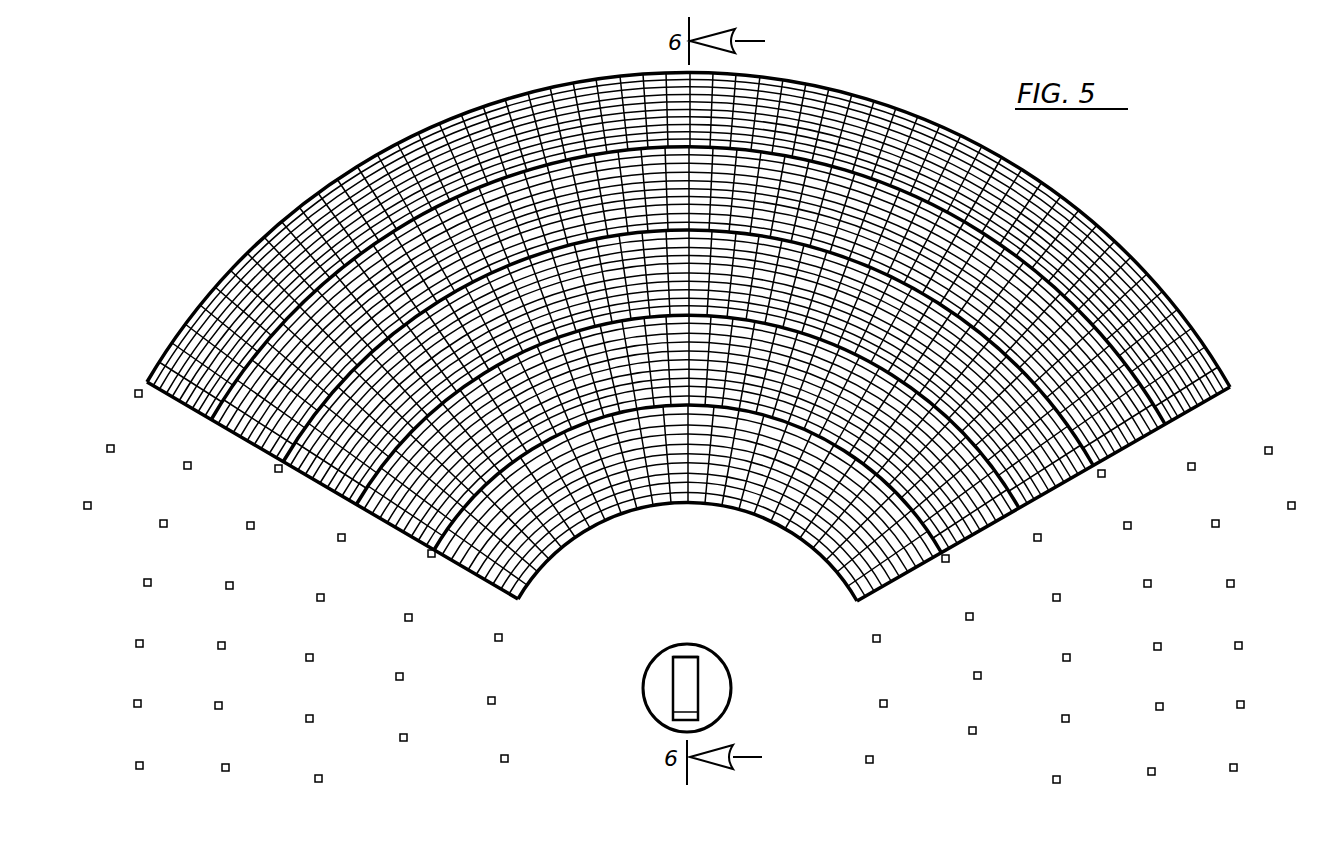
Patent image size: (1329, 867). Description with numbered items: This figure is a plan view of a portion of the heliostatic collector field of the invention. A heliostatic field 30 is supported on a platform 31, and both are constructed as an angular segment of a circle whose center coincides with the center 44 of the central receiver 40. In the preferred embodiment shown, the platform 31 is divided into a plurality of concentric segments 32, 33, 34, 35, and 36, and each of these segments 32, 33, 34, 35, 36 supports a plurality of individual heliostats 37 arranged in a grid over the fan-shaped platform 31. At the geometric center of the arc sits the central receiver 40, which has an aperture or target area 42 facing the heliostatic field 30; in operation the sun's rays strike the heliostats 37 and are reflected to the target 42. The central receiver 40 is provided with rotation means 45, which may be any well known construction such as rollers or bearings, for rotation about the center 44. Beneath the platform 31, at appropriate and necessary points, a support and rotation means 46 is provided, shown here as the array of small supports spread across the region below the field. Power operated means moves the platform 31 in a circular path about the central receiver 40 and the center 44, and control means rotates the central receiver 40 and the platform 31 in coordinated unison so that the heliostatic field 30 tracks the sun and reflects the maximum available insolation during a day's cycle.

The heliostatic field 30 is at (691, 344).
The platform 31 is at (333, 492).
The segment 32 is at (900, 580).
The segment 33 is at (983, 532).
The segment 34 is at (1042, 498).
The segment 35 is at (1130, 452).
The segment 36 is at (1198, 410).
The heliostat 37 is at (365, 188).
The central receiver 40 is at (690, 672).
The aperture or target area 42 is at (693, 656).
The center 44 is at (680, 680).
The rotation means 45 is at (715, 672).
The support and rotation means 46 is at (228, 645).